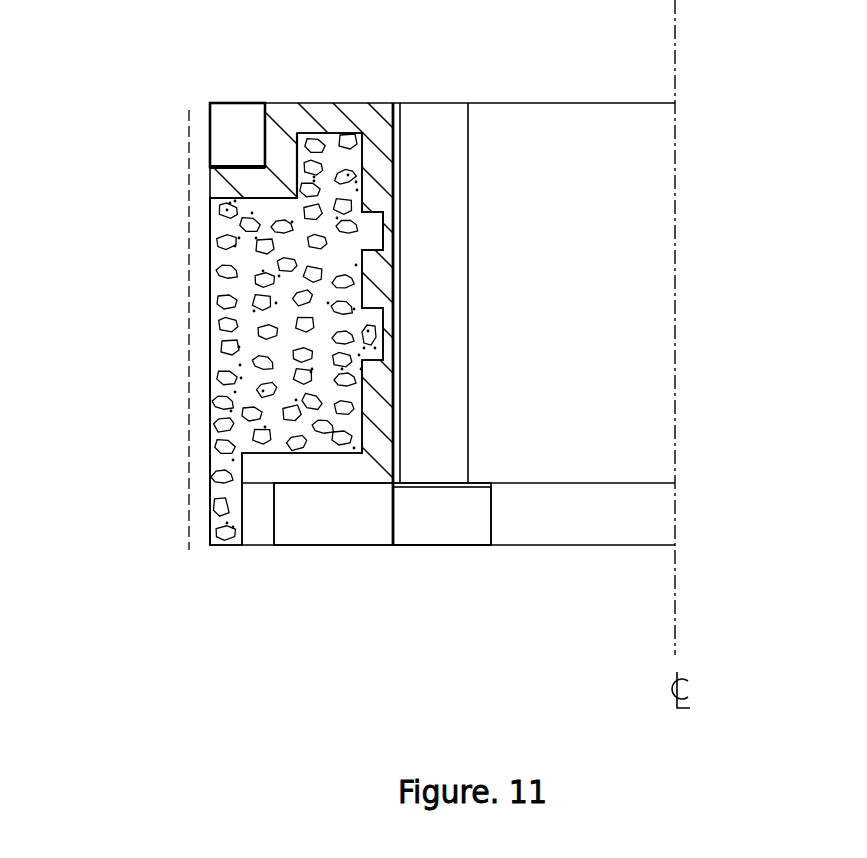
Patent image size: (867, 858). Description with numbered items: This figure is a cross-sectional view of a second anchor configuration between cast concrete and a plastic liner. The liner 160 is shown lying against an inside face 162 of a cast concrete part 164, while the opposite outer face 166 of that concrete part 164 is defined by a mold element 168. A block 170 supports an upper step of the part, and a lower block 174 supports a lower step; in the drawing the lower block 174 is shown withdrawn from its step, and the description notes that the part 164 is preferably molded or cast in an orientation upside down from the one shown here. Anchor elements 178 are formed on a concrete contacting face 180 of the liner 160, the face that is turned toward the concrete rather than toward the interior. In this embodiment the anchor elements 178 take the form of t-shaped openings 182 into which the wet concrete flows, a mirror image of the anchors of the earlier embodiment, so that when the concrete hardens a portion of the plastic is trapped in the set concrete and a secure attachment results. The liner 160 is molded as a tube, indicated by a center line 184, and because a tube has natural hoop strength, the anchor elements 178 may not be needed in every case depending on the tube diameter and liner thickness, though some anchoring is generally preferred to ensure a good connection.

The liner 160 is at (372, 120).
The inside face 162 is at (357, 189).
The cast concrete part 164 is at (240, 390).
The outer face 166 is at (208, 326).
The mold element 168 is at (188, 470).
The block 170 is at (242, 128).
The lower block 174 is at (423, 522).
The anchor elements 178 is at (375, 281).
The concrete contacting face 180 is at (395, 400).
The t-shaped openings 182 is at (385, 235).
The center line 184 is at (676, 601).